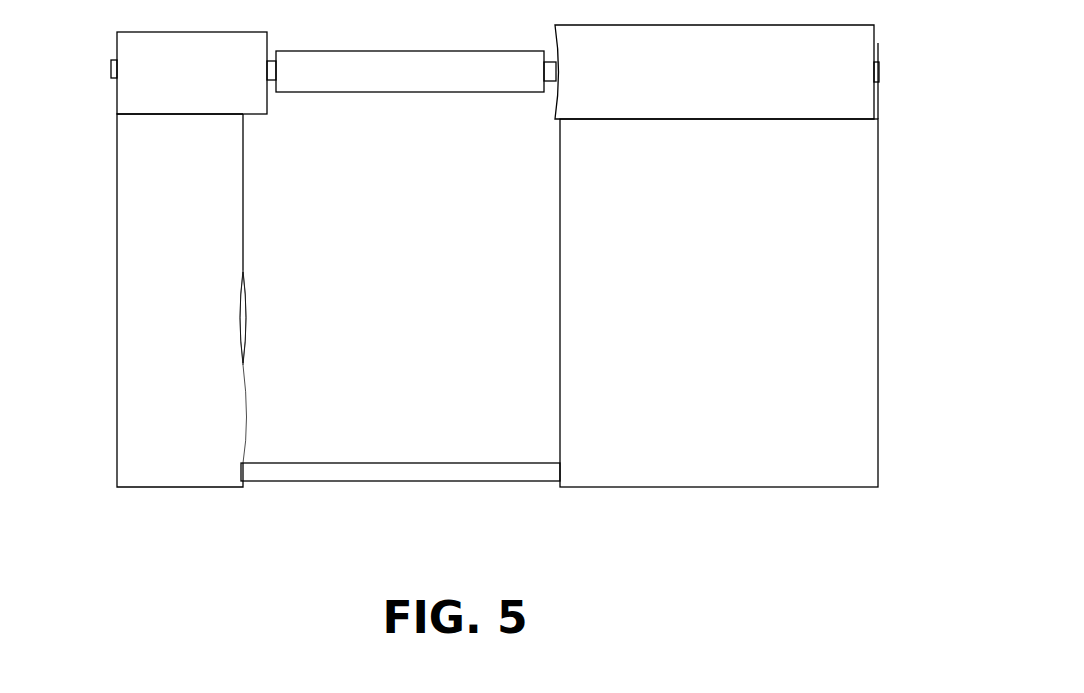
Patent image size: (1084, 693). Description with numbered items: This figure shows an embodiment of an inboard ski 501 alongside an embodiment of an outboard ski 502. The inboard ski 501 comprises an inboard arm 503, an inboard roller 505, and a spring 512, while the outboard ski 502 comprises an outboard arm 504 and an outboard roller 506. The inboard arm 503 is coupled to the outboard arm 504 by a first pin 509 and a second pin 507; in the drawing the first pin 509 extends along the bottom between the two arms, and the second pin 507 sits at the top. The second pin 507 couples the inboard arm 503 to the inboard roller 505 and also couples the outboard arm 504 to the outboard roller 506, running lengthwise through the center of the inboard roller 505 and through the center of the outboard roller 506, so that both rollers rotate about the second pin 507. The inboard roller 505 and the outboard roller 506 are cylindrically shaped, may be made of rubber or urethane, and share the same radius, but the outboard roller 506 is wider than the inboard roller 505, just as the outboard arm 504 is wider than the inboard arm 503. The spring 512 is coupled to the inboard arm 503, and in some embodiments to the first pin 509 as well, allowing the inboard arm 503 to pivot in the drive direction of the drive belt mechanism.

The inboard ski 501 is at (98, 241).
The outboard ski 502 is at (894, 286).
The inboard arm 503 is at (182, 300).
The outboard arm 504 is at (719, 265).
The inboard roller 505 is at (192, 73).
The outboard roller 506 is at (717, 72).
The second pin 507 is at (94, 64).
The first pin 509 is at (399, 488).
The spring 512 is at (256, 299).